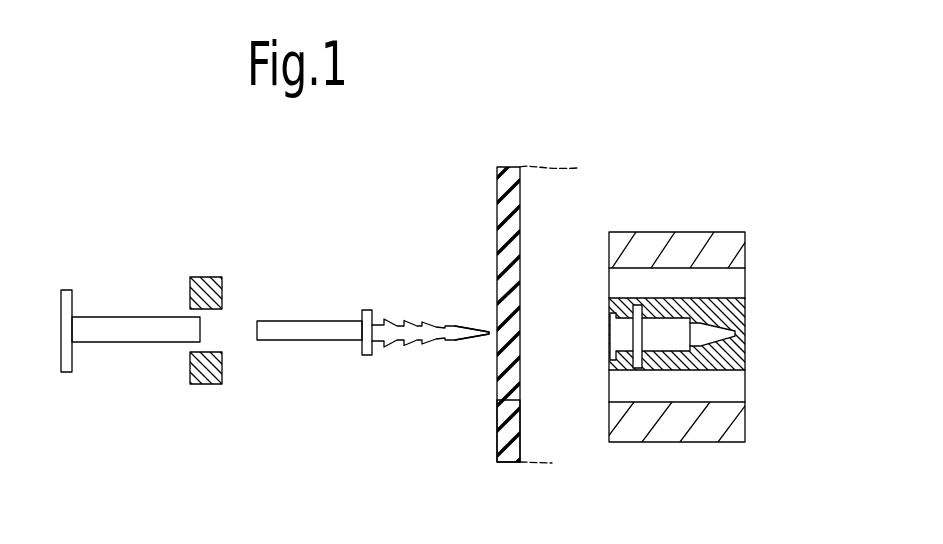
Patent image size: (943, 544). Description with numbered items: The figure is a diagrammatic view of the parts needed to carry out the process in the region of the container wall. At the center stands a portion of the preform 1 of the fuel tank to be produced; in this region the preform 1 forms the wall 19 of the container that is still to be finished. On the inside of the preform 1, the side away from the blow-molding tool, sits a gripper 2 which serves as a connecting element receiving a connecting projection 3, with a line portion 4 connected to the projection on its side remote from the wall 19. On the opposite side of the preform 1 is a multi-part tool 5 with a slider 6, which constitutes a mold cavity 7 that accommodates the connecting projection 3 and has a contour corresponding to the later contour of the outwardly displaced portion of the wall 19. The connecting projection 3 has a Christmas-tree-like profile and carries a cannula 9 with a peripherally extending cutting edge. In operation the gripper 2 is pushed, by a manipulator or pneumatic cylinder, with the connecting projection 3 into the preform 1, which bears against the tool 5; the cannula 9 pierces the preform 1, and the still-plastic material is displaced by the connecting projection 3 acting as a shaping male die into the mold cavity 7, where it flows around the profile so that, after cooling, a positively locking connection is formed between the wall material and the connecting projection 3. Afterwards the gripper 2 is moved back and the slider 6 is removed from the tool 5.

The preform 1 is at (498, 194).
The gripper 2 is at (130, 302).
The connecting projection 3 is at (388, 309).
The line portion 4 is at (288, 328).
The multi-part tool 5 is at (695, 303).
The slider 6 is at (738, 388).
The mold cavity 7 is at (662, 332).
The cannula 9 is at (468, 333).
The wall 19 is at (498, 424).